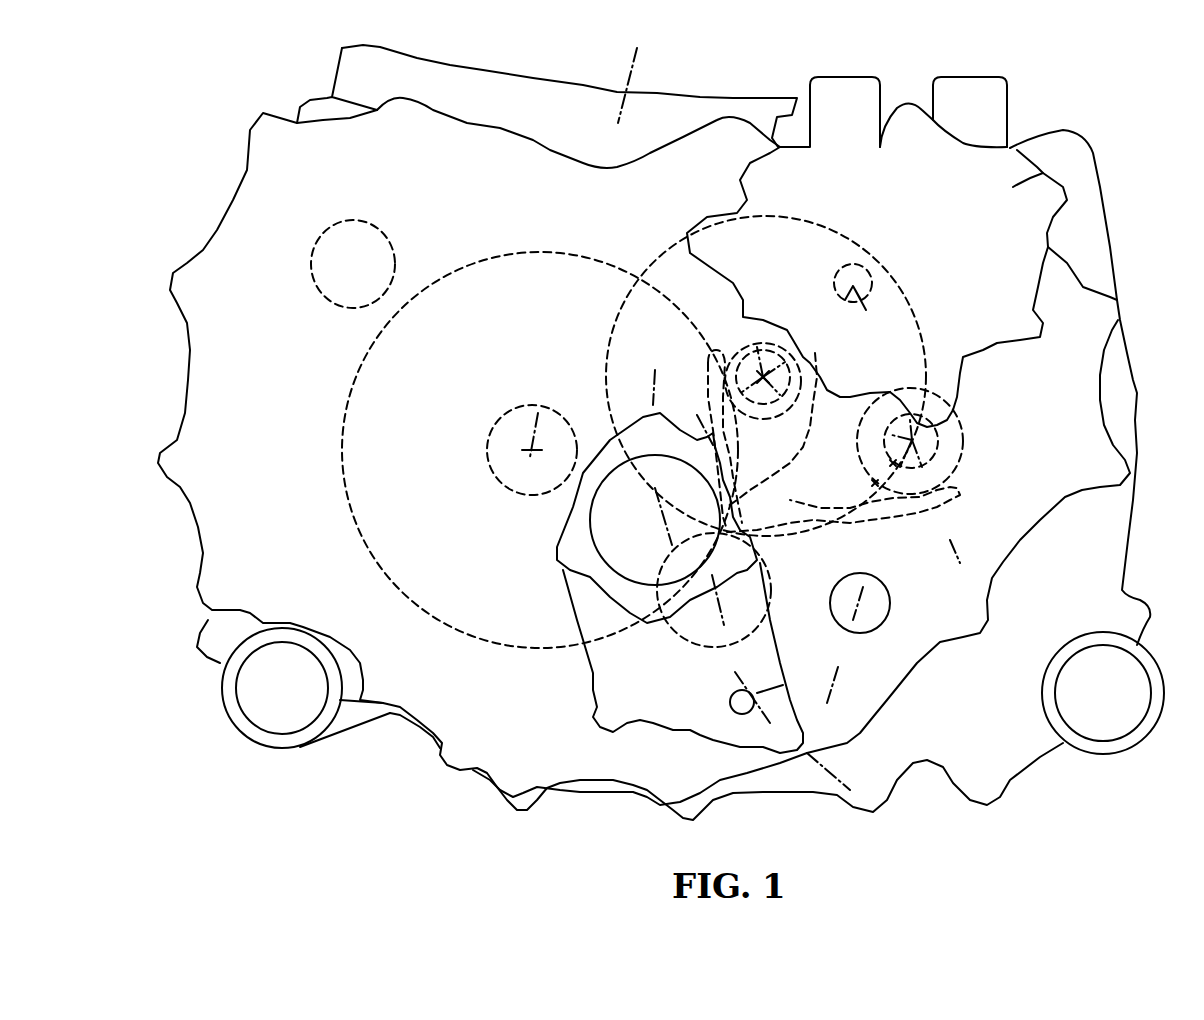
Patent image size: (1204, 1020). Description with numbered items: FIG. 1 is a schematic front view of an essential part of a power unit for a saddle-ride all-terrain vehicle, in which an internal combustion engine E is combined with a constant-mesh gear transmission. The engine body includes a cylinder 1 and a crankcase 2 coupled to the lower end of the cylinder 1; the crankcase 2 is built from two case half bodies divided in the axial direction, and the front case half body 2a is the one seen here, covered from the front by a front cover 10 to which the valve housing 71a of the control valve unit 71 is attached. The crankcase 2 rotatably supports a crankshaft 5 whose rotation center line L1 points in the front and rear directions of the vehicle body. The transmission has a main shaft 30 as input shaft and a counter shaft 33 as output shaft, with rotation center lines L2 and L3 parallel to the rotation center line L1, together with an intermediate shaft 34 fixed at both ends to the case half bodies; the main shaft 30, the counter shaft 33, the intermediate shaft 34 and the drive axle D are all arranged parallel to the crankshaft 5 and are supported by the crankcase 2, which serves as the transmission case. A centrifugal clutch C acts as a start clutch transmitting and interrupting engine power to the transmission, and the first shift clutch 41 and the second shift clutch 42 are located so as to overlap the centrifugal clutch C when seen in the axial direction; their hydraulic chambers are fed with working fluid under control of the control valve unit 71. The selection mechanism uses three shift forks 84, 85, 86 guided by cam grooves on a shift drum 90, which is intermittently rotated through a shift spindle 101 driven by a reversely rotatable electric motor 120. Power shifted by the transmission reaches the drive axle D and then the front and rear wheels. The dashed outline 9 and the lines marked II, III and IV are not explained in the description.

The cylinder 1 is at (452, 90).
The crankcase 2 is at (1152, 531).
The front case half body 2a is at (1107, 560).
The crankshaft 5 is at (523, 407).
The opening 9 is at (310, 262).
The front cover 10 is at (1077, 397).
The main shaft 30 is at (800, 352).
The counter shaft 33 is at (928, 413).
The intermediate shaft 34 is at (870, 270).
The first shift clutch 41 is at (767, 353).
The second shift clutch 42 is at (813, 223).
The control valve unit 71 is at (1033, 87).
The valve housing 71a is at (1043, 173).
The shift fork 84 is at (703, 340).
The shift fork 85 is at (898, 500).
The shift fork 86 is at (963, 490).
The shift drum 90 is at (668, 648).
The shift spindle 101 is at (737, 708).
The electric motor 120 is at (617, 547).
The centrifugal clutch C is at (478, 255).
The drive axle D is at (875, 618).
The internal combustion engine E is at (313, 49).
The rotation center line L1 is at (533, 450).
The rotation center line L2 is at (836, 300).
The rotation center line L3 is at (917, 440).
The section line II is at (846, 678).
The section line III is at (971, 560).
The section line IV is at (852, 781).